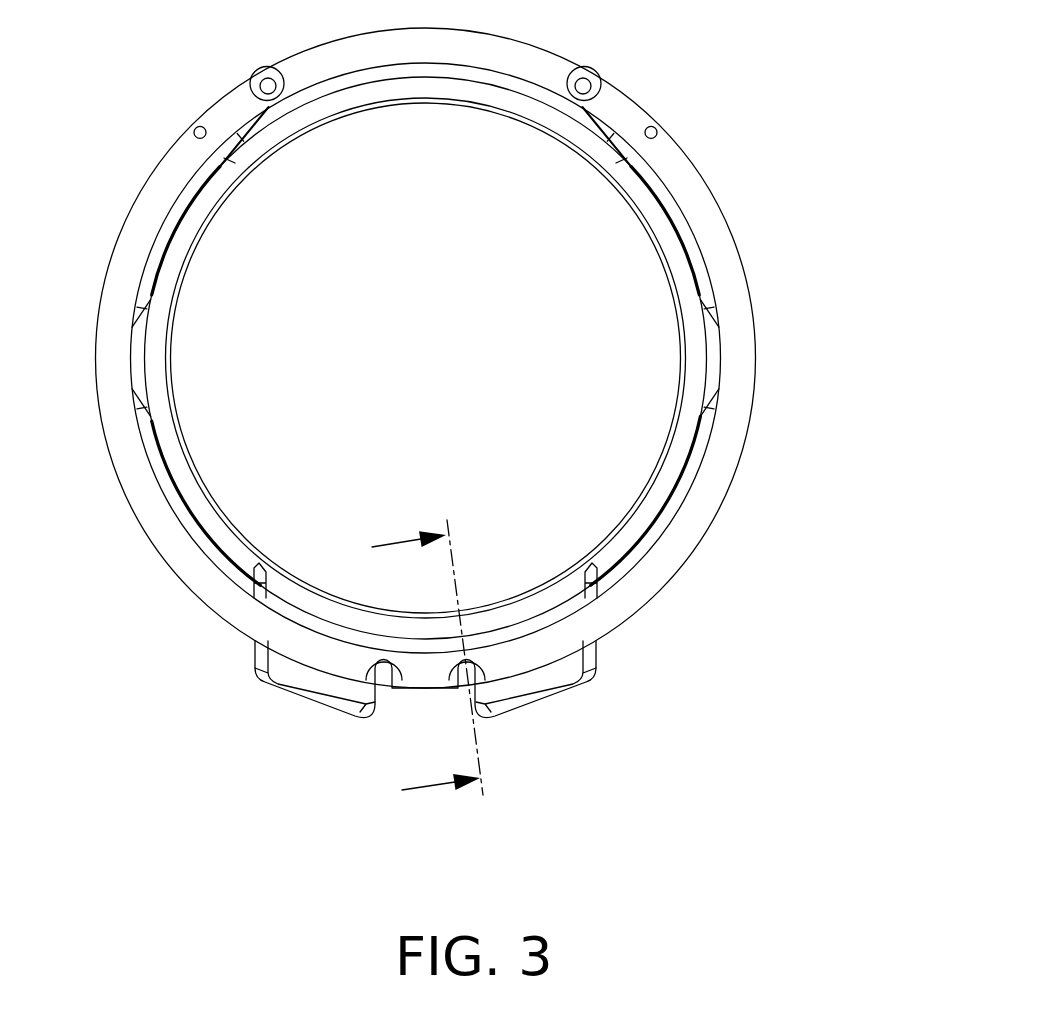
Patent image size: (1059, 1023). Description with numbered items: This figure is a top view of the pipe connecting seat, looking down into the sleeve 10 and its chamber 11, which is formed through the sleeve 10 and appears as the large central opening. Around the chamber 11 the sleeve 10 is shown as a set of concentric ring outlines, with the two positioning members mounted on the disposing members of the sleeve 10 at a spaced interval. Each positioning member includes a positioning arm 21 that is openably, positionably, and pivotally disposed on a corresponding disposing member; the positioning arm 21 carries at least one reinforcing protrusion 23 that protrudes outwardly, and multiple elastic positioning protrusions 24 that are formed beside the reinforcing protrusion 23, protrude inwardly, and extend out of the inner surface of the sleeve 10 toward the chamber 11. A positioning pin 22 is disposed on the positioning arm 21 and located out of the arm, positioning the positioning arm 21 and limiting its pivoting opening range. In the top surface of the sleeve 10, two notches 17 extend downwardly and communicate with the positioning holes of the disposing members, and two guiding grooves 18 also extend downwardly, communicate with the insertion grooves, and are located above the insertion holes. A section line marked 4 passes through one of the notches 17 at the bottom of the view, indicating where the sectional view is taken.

The sleeve 10 is at (685, 535).
The chamber 11 is at (438, 374).
The notches 17 is at (391, 690).
The guiding grooves 18 is at (585, 72).
The positioning arm 21 is at (681, 214).
The positioning pin 22 is at (656, 127).
The reinforcing protrusion 23 is at (713, 313).
The elastic positioning protrusions 24 is at (650, 202).
The section line 4- 4 is at (427, 648).